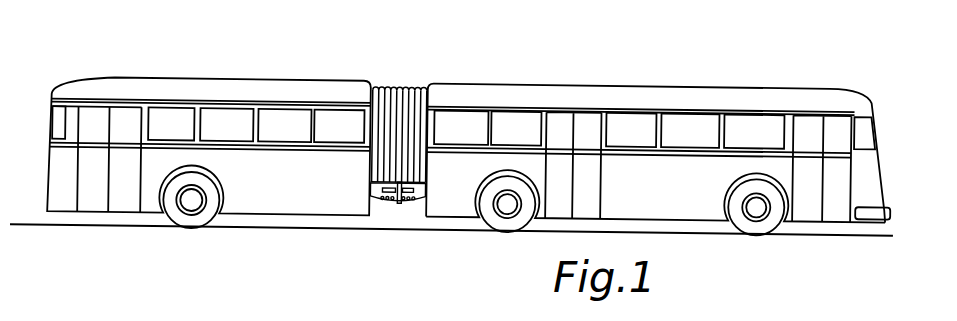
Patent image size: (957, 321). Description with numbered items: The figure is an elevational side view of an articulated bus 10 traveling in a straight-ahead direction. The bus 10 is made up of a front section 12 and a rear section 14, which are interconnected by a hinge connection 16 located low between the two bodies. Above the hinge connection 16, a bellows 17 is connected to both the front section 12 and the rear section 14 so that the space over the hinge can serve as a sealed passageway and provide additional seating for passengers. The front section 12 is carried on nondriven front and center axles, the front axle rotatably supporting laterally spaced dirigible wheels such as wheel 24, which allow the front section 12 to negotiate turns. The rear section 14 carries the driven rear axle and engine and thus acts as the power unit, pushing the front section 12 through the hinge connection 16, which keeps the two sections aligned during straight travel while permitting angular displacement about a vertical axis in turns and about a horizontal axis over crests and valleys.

The articulated bus 10 is at (451, 144).
The front section 12 is at (742, 81).
The rear section 14 is at (205, 76).
The hinge connection 16 is at (385, 210).
The bellows 17 is at (406, 88).
The dirigible wheel 24 is at (768, 236).